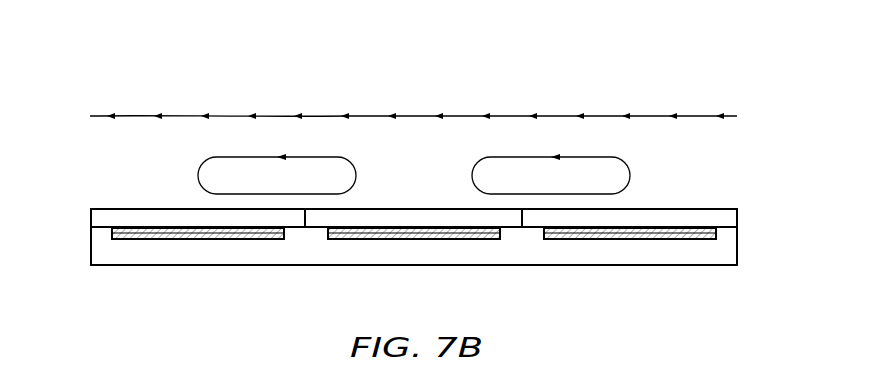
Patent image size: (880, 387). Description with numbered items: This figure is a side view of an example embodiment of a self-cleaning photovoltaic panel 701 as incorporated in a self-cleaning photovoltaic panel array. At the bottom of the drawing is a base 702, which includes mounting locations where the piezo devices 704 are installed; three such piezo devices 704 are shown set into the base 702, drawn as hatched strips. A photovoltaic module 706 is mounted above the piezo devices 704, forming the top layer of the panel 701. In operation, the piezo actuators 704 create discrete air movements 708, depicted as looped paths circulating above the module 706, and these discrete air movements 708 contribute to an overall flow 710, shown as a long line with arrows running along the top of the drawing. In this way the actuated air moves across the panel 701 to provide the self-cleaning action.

The self-cleaning photovoltaic panel 701 is at (630, 73).
The base 702 is at (228, 252).
The piezo device 704 is at (145, 232).
The photovoltaic module 706 is at (102, 220).
The discrete air movements 708 is at (198, 173).
The overall flow 710 is at (180, 116).